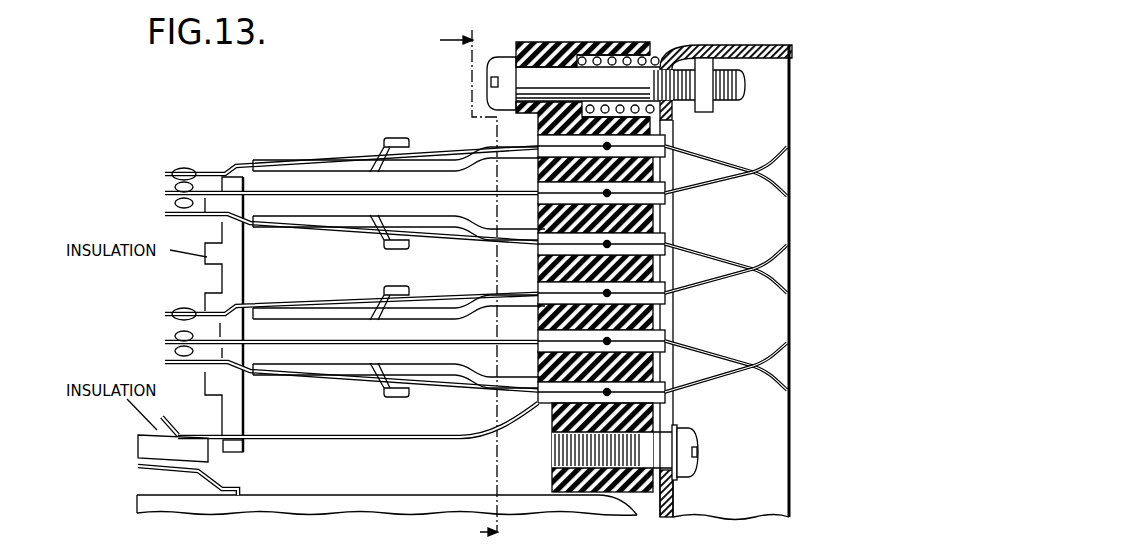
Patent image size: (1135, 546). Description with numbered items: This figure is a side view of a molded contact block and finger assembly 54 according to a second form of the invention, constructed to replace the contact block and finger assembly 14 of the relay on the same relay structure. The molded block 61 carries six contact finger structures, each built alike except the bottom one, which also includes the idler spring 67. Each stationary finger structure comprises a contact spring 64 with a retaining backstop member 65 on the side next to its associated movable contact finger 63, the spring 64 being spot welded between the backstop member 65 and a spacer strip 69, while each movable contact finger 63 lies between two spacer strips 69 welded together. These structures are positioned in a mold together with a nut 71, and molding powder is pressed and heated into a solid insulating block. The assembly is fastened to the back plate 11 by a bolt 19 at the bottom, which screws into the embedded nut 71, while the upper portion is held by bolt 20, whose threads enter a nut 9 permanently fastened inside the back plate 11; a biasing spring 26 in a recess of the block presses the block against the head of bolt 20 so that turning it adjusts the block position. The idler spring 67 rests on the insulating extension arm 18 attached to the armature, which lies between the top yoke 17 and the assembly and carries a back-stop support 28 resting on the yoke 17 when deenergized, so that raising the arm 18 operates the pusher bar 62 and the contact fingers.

The contact block and finger assembly 14 is at (473, 278).
The bolt 20 is at (505, 57).
The molded block 61 is at (593, 42).
The biasing spring 26 is at (627, 46).
The back plate 11 is at (720, 46).
The nut 9 is at (713, 110).
The molded contact block and finger assembly 54 is at (405, 110).
The contact spring 64 is at (312, 160).
The movable contact finger 63 is at (297, 192).
The backstop member 65 is at (462, 172).
The spacer strip 69 is at (538, 136).
The pusher bar 62 is at (245, 272).
The idler spring 67 is at (310, 438).
The extension arm 18 is at (138, 452).
The back-stop support 28 is at (222, 481).
The top yoke 17 is at (392, 495).
The bolt 19 is at (700, 432).
The nut 71 is at (623, 490).